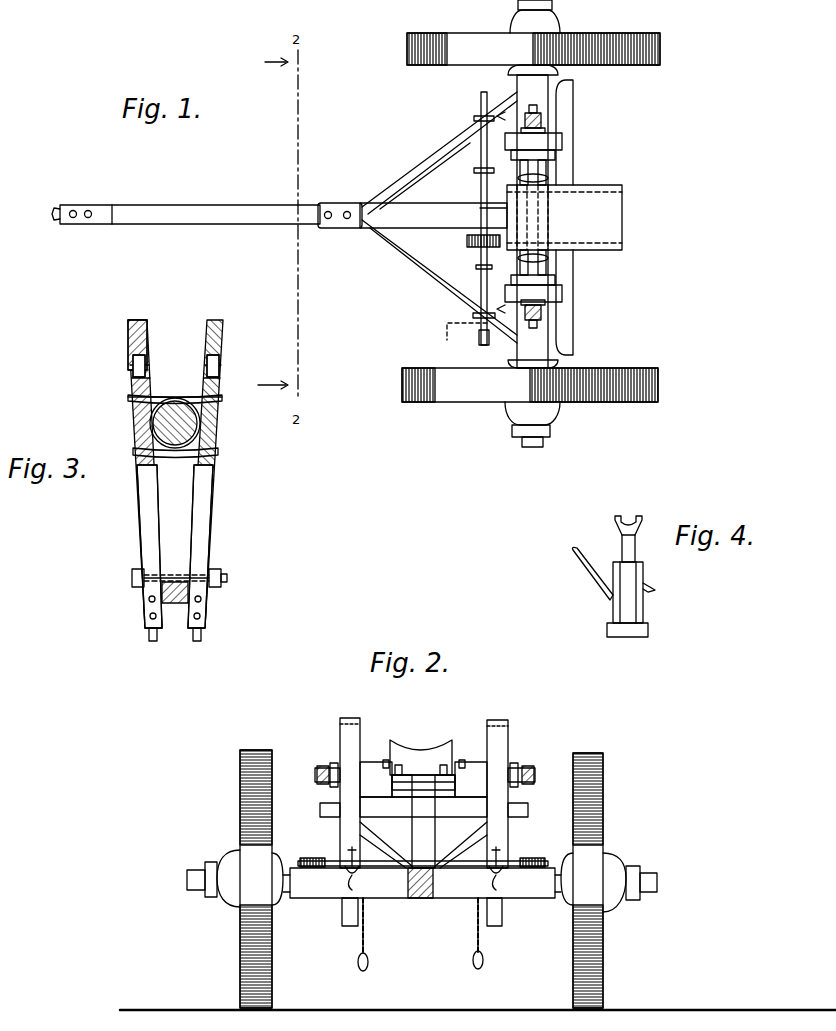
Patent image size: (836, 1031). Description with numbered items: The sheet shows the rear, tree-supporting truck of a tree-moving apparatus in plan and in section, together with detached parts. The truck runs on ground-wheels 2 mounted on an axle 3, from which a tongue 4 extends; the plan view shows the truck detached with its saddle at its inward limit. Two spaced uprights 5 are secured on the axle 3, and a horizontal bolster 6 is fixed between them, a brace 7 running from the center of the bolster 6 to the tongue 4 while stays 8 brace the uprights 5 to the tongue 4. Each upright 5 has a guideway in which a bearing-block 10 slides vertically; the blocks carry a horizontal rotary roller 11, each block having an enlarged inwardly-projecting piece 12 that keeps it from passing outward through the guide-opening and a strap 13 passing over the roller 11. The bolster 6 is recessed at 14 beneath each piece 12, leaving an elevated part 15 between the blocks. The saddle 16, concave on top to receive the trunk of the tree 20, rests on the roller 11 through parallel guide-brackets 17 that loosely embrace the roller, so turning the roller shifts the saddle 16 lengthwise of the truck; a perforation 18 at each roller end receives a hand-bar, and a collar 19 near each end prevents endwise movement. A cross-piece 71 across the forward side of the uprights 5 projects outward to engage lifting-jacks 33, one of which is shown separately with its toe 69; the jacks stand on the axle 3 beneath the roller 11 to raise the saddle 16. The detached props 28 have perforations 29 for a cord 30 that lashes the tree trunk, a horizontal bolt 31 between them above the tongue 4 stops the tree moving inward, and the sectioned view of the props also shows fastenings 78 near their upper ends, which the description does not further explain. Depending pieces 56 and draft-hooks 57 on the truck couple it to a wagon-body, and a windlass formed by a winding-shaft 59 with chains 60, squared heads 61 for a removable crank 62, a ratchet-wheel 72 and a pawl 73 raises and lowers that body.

In FIG. 1, the ground-wheels 2 is at (660, 49).
In FIG. 2, the ground-wheels 2 is at (240, 780).
In FIG. 1, the axle 3 is at (549, 80).
In FIG. 2, the axle 3 is at (335, 893).
In FIG. 1, the tongue 4 is at (203, 205).
In FIG. 3, the tongue 4 is at (182, 605).
In FIG. 2, the tongue 4 is at (425, 899).
In FIG. 1, the uprights 5 is at (562, 141).
In FIG. 2, the uprights 5 is at (508, 736).
In FIG. 2, the bolster 6 is at (468, 822).
In FIG. 1, the brace 7 is at (408, 215).
In FIG. 2, the brace 7 is at (412, 828).
In FIG. 1, the stays 8 is at (412, 258).
In FIG. 2, the stays 8 is at (497, 826).
In FIG. 2, the bearing-blocks 10 is at (366, 764).
In FIG. 1, the roller 11 is at (537, 118).
In FIG. 2, the roller 11 is at (318, 768).
In FIG. 1, the inwardly-projecting piece 12 is at (547, 170).
In FIG. 2, the inwardly-projecting piece 12 is at (424, 786).
In FIG. 1, the strap 13 is at (548, 176).
In FIG. 2, the strap 13 is at (386, 760).
In FIG. 2, the recess 14 is at (412, 804).
In FIG. 2, the elevated part 15 is at (440, 792).
In FIG. 1, the saddle 16 is at (605, 216).
In FIG. 2, the saddle 16 is at (430, 758).
In FIG. 1, the guide-brackets 17 is at (622, 195).
In FIG. 2, the guide-brackets 17 is at (440, 743).
In FIG. 1, the perforation 18 is at (533, 113).
In FIG. 2, the perforation 18 is at (322, 784).
In FIG. 1, the collar 19 is at (545, 130).
In FIG. 2, the collar 19 is at (333, 763).
In FIG. 3, the tree 20 is at (178, 438).
In FIG. 3, the props 28 is at (150, 542).
In FIG. 3, the perforations 29 is at (128, 370).
In FIG. 3, the cord 30 is at (160, 398).
In FIG. 3, the bolt 31 is at (228, 580).
In FIG. 4, the lifting-jack 33 is at (620, 606).
In FIG. 2, the depending pieces 56 is at (350, 926).
In FIG. 1, the draft-hooks 57 is at (510, 90).
In FIG. 2, the draft-hooks 57 is at (345, 850).
In FIG. 1, the winding-shaft 59 is at (480, 257).
In FIG. 2, the winding-shaft 59 is at (392, 866).
In FIG. 1, the chains 60 is at (480, 170).
In FIG. 2, the chains 60 is at (366, 938).
In FIG. 1, the squared head 61 is at (481, 100).
In FIG. 2, the squared head 61 is at (300, 858).
In FIG. 1, the crank 62 is at (464, 332).
In FIG. 4, the toe 69 is at (656, 590).
In FIG. 1, the cross-piece 71 is at (573, 98).
In FIG. 2, the cross-piece 71 is at (320, 813).
In FIG. 1, the ratchet-wheel 72 is at (466, 241).
In FIG. 1, the pawl 73 is at (492, 218).
In FIG. 3, the bolt 78 is at (207, 340).